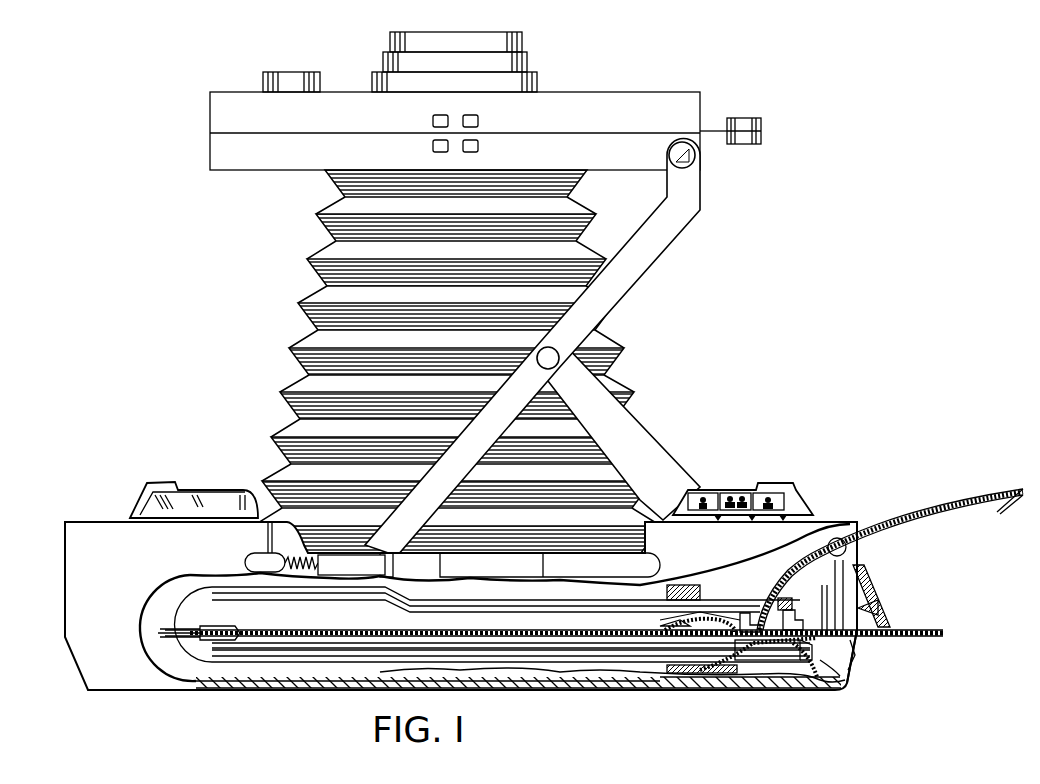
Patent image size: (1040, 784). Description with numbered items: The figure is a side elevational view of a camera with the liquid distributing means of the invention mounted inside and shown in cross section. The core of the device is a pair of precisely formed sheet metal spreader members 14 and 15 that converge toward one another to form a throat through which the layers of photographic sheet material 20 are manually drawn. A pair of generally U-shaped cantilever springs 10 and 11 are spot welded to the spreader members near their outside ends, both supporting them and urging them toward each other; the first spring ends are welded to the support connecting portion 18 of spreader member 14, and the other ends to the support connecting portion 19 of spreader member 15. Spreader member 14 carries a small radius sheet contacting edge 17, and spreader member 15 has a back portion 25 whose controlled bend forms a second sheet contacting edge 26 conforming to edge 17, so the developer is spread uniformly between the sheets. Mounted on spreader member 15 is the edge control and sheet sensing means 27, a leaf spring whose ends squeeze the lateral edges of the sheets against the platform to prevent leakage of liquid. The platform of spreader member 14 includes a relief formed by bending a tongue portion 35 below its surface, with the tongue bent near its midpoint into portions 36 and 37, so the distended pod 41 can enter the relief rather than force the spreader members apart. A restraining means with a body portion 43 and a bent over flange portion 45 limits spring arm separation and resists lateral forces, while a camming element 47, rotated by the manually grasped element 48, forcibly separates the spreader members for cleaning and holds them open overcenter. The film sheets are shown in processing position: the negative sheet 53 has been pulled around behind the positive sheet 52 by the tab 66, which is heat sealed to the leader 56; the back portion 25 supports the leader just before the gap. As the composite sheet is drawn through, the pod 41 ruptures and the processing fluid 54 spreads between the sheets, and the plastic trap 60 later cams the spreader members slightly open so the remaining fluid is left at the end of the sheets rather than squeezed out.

The U-shaped spring 10 is at (295, 652).
The U-shaped spring 11 is at (345, 595).
The spreader member 14 is at (860, 662).
The spreader member 15 is at (840, 596).
The sheet contacting edge 17 is at (853, 650).
The support connecting portion 18 is at (842, 676).
The support connecting portion 19 is at (872, 580).
The sheets of photographic material 20 is at (232, 629).
The back portion 25 is at (827, 610).
The sheet contacting edge 26 is at (862, 605).
The edge control-sheet sensing means 27 is at (777, 593).
The tongue portion 35 is at (798, 663).
The upper portion of tongue 36 is at (810, 670).
The tongue portion 37 is at (803, 657).
The pod 41 is at (673, 623).
The body portion 43 is at (663, 638).
The bent over flange portion 45 is at (690, 580).
The camming element 47 is at (743, 620).
The element 48 is at (735, 667).
The positive sheet 52 is at (255, 633).
The negative sheet 53 is at (332, 640).
The processing fluid 54 is at (700, 617).
The leader 56 is at (928, 632).
The trap 60 is at (158, 632).
The tab 66 is at (990, 497).